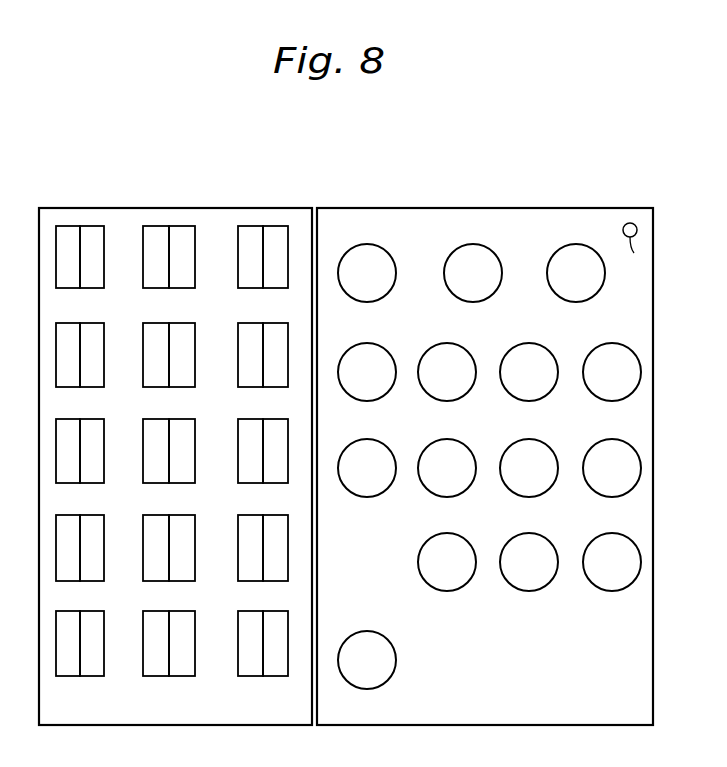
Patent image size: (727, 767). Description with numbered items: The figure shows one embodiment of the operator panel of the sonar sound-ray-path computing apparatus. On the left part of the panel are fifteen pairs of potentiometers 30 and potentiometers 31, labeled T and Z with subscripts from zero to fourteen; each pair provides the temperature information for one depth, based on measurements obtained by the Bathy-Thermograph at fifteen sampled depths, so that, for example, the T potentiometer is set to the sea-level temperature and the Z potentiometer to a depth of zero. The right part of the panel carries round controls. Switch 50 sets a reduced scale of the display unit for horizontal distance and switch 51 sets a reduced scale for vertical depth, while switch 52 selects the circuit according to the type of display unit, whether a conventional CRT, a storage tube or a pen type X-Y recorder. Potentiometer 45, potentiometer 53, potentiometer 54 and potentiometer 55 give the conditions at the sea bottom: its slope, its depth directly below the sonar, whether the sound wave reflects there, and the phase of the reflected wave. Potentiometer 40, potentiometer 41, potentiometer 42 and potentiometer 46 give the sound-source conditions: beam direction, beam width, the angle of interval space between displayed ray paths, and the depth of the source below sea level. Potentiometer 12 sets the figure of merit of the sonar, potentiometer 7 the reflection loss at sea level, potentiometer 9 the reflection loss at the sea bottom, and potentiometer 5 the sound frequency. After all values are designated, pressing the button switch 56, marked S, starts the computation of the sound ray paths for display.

The potentiometers 30 is at (66, 227).
The potentiometers 31 is at (93, 227).
The switch 50 is at (372, 301).
The switch 51 is at (478, 301).
The switch 52 is at (582, 301).
The button switch 56 is at (623, 230).
The potentiometer 53 is at (372, 400).
The potentiometer 54 is at (452, 400).
The potentiometer 55 is at (534, 400).
The potentiometer 45 is at (622, 400).
The potentiometer 46 is at (372, 496).
The potentiometer 40 is at (457, 495).
The potentiometer 41 is at (541, 494).
The potentiometer 42 is at (622, 495).
The potentiometer 12 is at (458, 589).
The potentiometer 7 is at (542, 588).
The potentiometer 9 is at (624, 589).
The potentiometer 5 is at (378, 686).